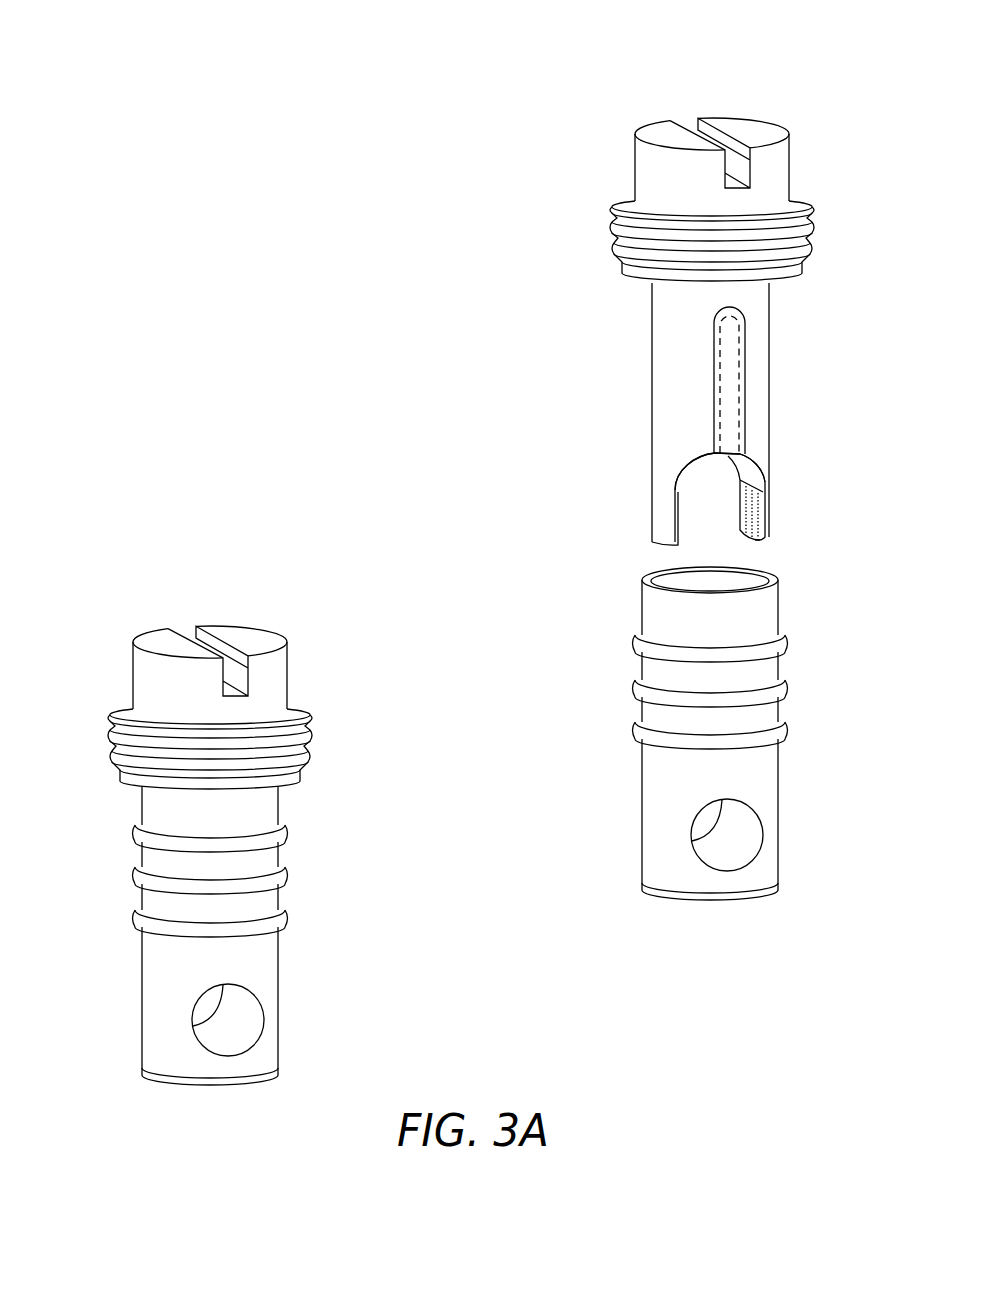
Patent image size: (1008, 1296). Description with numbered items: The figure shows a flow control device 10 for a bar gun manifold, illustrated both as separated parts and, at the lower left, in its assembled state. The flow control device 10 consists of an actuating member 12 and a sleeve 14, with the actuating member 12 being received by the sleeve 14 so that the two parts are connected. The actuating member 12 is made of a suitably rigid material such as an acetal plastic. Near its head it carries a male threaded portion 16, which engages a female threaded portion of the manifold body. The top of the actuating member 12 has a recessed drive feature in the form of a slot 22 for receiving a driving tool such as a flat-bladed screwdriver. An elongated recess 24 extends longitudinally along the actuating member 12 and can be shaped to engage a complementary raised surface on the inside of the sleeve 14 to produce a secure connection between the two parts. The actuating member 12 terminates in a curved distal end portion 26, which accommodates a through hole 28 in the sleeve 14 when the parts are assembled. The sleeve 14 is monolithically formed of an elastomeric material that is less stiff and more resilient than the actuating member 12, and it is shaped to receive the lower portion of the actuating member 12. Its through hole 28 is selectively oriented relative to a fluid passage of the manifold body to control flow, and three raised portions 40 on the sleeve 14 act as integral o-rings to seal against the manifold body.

The flow control device 10 is at (330, 560).
The actuating member 12 is at (792, 328).
The sleeve 14 is at (800, 712).
The male threaded portion 16 is at (612, 230).
The slot 22 is at (672, 101).
The elongated recess 24 is at (738, 437).
The curved distal end portion 26 is at (790, 512).
The through hole 28 is at (745, 844).
The raised portions 40 is at (636, 647).